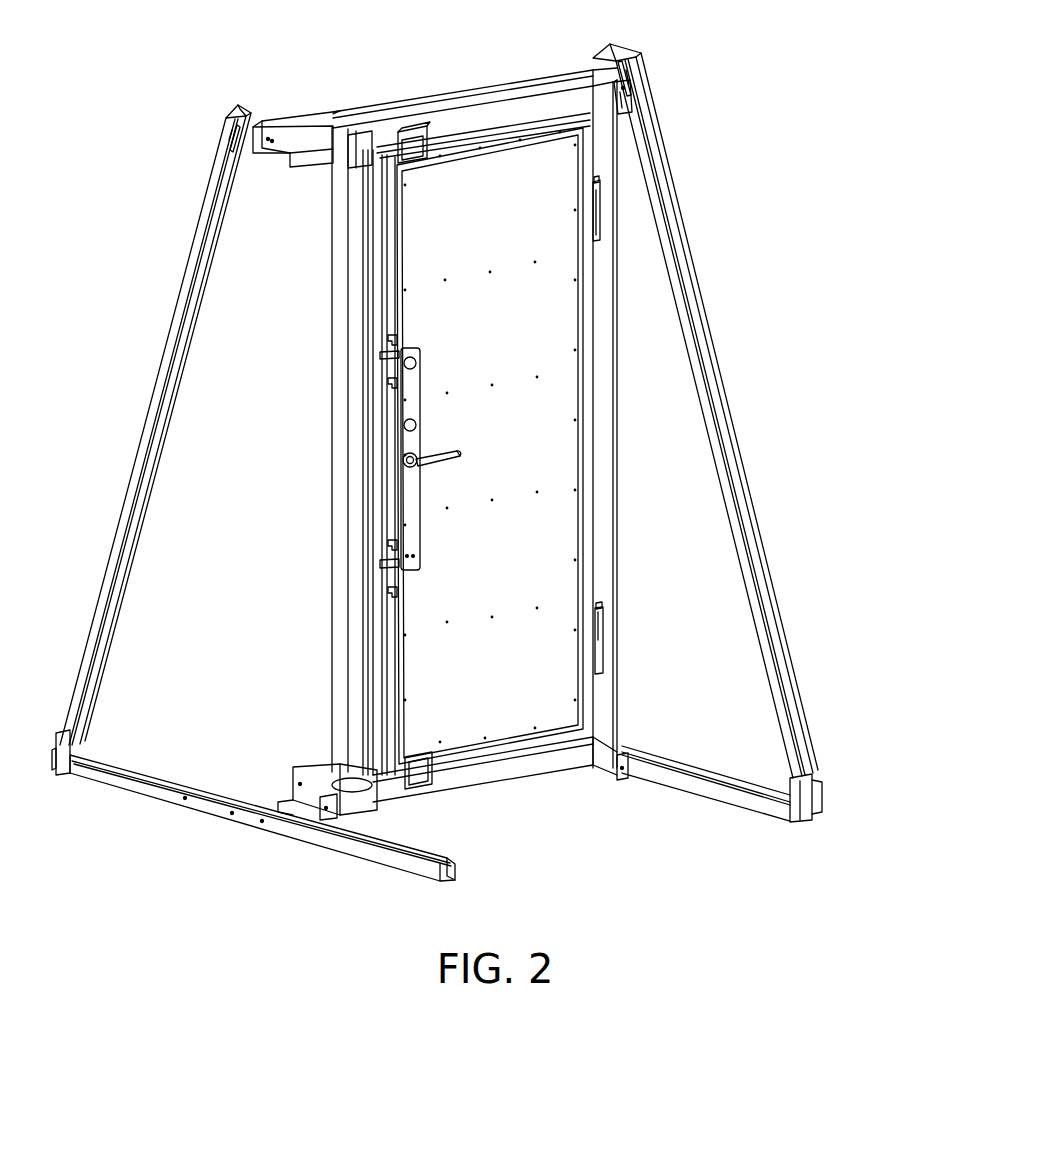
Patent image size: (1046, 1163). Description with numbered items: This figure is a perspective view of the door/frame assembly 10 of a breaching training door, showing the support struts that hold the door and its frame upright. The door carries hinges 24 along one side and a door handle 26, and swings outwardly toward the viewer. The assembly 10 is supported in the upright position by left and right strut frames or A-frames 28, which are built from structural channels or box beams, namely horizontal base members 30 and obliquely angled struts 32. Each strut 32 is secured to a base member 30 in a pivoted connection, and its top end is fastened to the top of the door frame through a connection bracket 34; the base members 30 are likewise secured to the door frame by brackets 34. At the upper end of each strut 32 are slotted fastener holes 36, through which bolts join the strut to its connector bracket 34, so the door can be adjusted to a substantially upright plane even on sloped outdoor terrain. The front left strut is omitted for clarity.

The door/frame assembly 10 is at (449, 64).
The hinges 24 is at (600, 194).
The door handle 26 is at (436, 468).
The strut frames 28 is at (207, 176).
The base members 30 is at (187, 807).
The obliquely angled struts 32 is at (118, 546).
The connection brackets 34 is at (267, 122).
The slotted fastener holes 36 is at (234, 124).